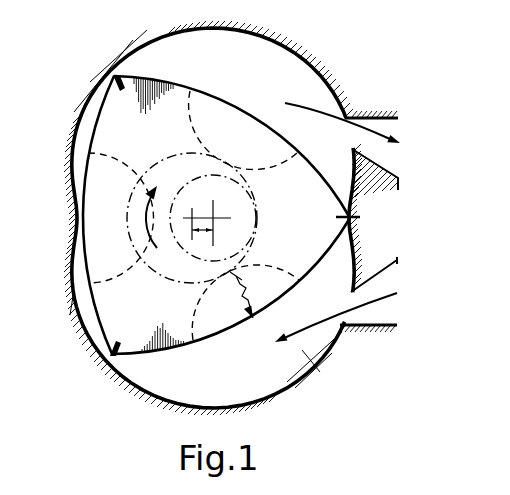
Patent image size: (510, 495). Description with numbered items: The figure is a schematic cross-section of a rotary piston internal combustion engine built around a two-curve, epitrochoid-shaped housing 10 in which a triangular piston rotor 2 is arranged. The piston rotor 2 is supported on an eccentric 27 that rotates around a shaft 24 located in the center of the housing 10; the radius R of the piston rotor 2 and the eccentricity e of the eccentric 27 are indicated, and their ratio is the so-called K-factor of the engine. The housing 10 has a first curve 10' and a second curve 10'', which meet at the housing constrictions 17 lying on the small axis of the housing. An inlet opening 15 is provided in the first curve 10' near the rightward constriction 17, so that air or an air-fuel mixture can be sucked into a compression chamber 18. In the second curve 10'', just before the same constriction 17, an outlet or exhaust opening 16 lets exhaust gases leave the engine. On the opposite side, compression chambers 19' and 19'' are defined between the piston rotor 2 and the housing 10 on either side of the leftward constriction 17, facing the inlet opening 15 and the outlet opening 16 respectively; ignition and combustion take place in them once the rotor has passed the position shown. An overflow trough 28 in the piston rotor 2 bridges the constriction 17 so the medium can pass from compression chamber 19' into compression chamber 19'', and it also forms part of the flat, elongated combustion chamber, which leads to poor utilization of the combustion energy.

The piston rotor 2 is at (304, 211).
The housing 10 is at (213, 232).
The first curve of the housing 10' is at (233, 298).
The second curve of the housing 10'' is at (230, 144).
The inlet opening 15 is at (355, 312).
The outlet or exhaust opening 16 is at (364, 128).
The housing constriction 17 is at (68, 213).
The compression chamber 18 is at (313, 369).
The compression chamber 19' is at (53, 305).
The compression chamber 19'' is at (101, 71).
The shaft 24 is at (204, 211).
The eccentric 27 is at (167, 277).
The overflow trough 28 is at (238, 130).
The radius of the piston rotor R is at (236, 275).
The eccentricity of the eccentric e is at (202, 242).